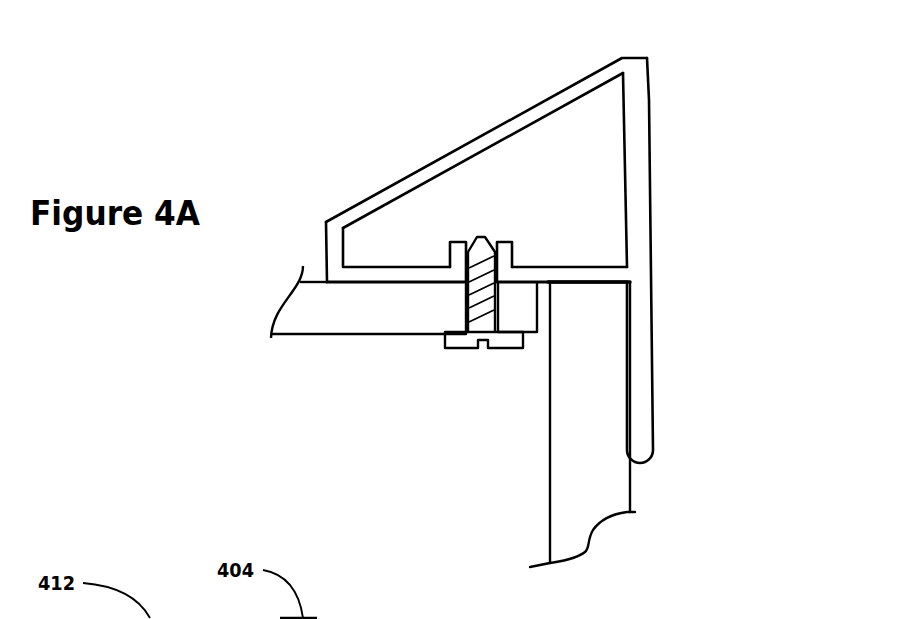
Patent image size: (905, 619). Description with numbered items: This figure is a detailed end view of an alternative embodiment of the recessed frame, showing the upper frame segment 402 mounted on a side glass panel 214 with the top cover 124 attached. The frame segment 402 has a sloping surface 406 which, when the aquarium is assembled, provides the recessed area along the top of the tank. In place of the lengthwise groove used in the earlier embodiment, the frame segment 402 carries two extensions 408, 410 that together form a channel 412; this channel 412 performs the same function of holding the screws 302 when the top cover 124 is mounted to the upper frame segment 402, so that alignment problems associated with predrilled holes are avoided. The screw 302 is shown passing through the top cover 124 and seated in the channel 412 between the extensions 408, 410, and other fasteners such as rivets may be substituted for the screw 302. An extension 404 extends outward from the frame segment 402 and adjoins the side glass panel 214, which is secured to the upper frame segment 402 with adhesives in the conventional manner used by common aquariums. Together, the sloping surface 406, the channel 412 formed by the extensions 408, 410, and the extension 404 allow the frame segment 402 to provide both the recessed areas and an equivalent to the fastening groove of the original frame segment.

The upper frame segment 402 is at (518, 246).
The sloping surface 406 is at (486, 143).
The extension 410 is at (396, 252).
The channel 412 is at (493, 240).
The extension 408 is at (530, 270).
The extension 404 is at (637, 347).
The screw 302 is at (468, 343).
The top cover 124 is at (322, 312).
The side glass panel 214 is at (593, 470).